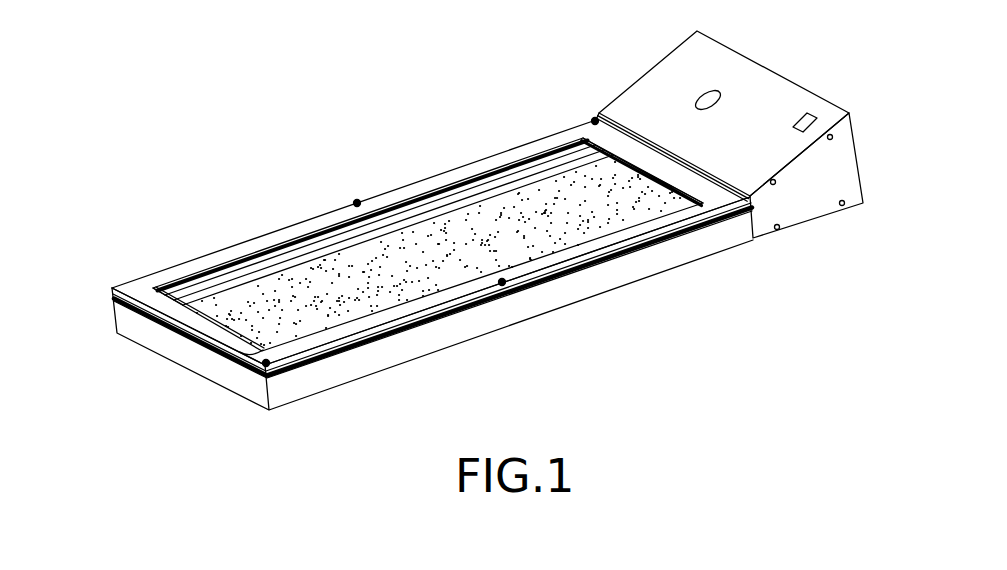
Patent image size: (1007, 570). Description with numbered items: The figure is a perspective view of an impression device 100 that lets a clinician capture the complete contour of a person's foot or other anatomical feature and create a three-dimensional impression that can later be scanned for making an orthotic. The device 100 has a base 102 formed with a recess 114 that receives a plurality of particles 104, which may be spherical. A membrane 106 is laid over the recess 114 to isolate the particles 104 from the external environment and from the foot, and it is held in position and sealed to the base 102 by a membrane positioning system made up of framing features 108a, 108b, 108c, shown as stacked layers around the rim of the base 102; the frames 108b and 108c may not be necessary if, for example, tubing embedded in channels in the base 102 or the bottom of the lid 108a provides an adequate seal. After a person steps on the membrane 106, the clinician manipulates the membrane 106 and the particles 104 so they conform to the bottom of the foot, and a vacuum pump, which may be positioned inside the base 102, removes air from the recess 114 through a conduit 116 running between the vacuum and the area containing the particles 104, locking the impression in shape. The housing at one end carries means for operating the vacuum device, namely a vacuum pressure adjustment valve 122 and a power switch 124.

The impression device 100 is at (146, 100).
The base 102 is at (135, 327).
The particles 104 is at (234, 364).
The membrane 106 is at (110, 302).
The framing feature (lid) 108a is at (132, 292).
The membrane frame 108b is at (110, 295).
The membrane frame 108c is at (113, 312).
The recess 114 is at (583, 233).
The conduit 116 is at (728, 220).
The vacuum pressure adjustment valve 122 is at (697, 96).
The power switch 124 is at (812, 111).